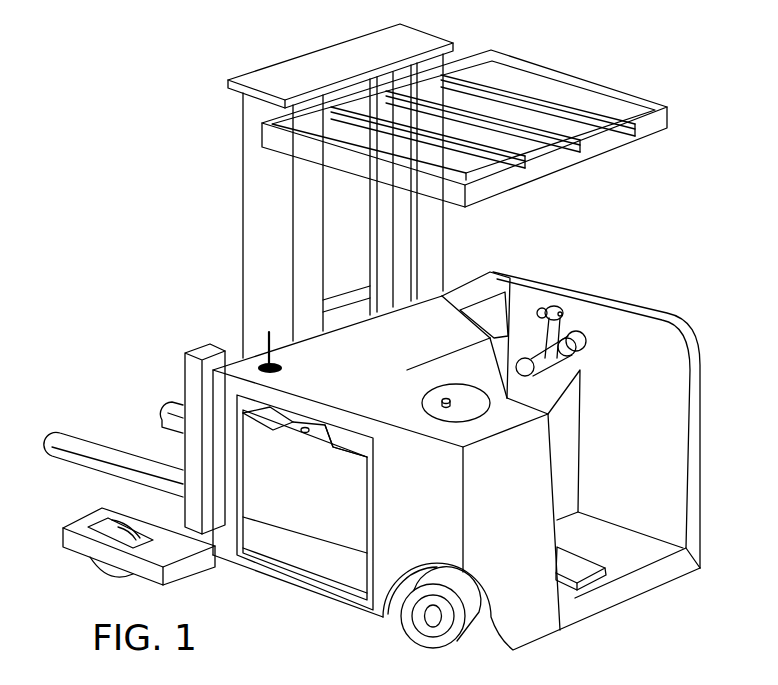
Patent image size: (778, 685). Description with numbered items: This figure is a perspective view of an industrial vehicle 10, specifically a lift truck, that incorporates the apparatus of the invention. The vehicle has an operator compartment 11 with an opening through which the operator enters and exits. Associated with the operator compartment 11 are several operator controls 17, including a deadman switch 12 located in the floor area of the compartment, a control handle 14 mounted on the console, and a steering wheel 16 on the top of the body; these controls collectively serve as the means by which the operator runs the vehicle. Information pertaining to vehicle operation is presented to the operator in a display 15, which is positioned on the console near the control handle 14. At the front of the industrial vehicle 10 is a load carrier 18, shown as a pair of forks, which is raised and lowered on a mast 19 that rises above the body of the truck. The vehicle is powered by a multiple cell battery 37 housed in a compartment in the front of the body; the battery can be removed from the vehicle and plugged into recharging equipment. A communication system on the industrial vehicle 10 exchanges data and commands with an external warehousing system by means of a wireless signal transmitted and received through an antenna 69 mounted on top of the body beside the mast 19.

The industrial vehicle 10 is at (184, 197).
The operator compartment 11 is at (607, 443).
The deadman switch 12 is at (590, 578).
The control handle 14 is at (560, 313).
The display 15 is at (503, 303).
The steering wheel 16 is at (438, 398).
The operator controls 17 is at (602, 320).
The load carrier 18 is at (168, 412).
The mast 19 is at (313, 57).
The battery 37 is at (284, 554).
The antenna 69 is at (266, 343).